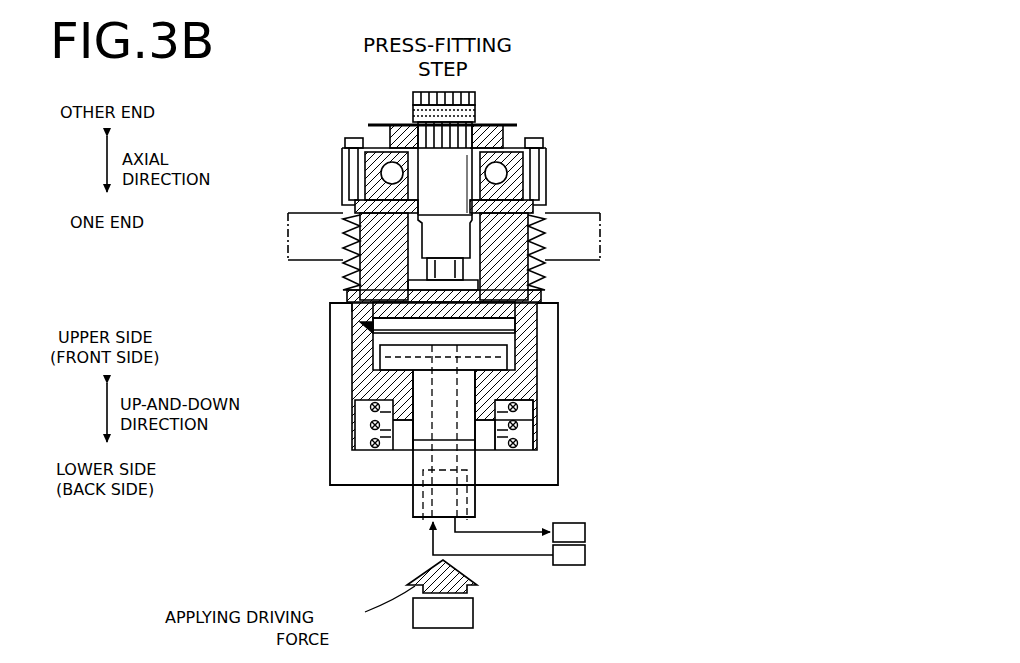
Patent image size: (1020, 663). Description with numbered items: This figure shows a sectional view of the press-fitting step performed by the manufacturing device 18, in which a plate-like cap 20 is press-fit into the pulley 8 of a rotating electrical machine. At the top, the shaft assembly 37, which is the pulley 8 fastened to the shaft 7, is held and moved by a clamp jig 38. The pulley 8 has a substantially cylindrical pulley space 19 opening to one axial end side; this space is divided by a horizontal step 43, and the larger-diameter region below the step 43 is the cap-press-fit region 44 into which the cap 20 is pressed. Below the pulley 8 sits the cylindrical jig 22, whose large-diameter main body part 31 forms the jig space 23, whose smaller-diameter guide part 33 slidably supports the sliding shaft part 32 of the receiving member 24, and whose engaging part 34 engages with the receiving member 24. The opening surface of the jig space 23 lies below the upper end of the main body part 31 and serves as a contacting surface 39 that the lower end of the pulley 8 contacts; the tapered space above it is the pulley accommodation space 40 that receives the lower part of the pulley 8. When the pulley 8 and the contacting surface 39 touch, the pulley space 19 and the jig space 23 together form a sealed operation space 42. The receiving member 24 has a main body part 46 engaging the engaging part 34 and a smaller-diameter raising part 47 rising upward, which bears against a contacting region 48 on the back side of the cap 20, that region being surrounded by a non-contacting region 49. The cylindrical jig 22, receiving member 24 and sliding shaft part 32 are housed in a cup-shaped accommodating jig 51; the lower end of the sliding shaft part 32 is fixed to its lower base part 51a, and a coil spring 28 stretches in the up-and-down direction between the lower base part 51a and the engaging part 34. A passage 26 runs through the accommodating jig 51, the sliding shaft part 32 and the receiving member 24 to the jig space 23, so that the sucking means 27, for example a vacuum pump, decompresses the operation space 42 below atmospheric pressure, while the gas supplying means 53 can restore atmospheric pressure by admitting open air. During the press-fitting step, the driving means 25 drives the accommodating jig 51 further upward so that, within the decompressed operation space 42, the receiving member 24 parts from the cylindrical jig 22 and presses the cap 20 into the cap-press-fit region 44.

The manufacturing device 18 is at (778, 150).
The shaft assembly 37 is at (661, 36).
The shaft 7 is at (453, 192).
The pulley 8 is at (533, 213).
The clamp jig 38 is at (577, 225).
The operation space 42 is at (482, 295).
The step 43 is at (345, 293).
The pulley space 19 is at (522, 278).
The cap-press-fit region 44 is at (541, 290).
The jig space 23 is at (507, 355).
The pulley accommodation space 40 is at (558, 308).
The contacting surface 39 is at (330, 316).
The cap 20 is at (352, 340).
The non-contacting region 49 is at (365, 334).
The coil spring 28 is at (397, 448).
The sliding shaft part 32 is at (423, 445).
The contacting region 48 is at (530, 440).
The cylindrical jig 22 is at (256, 415).
The main body part 31 is at (385, 400).
The engaging part 34 is at (400, 423).
The guide part 33 is at (390, 446).
The receiving member 24 is at (668, 392).
The raising part 47 is at (530, 393).
The main body part 46 is at (530, 418).
The accommodating jig 51 is at (554, 436).
The lower base part 51a is at (532, 473).
The passage 26 is at (415, 525).
The driving means 25 is at (473, 613).
The sucking means 27 is at (585, 532).
The gas supplying means 53 is at (585, 556).